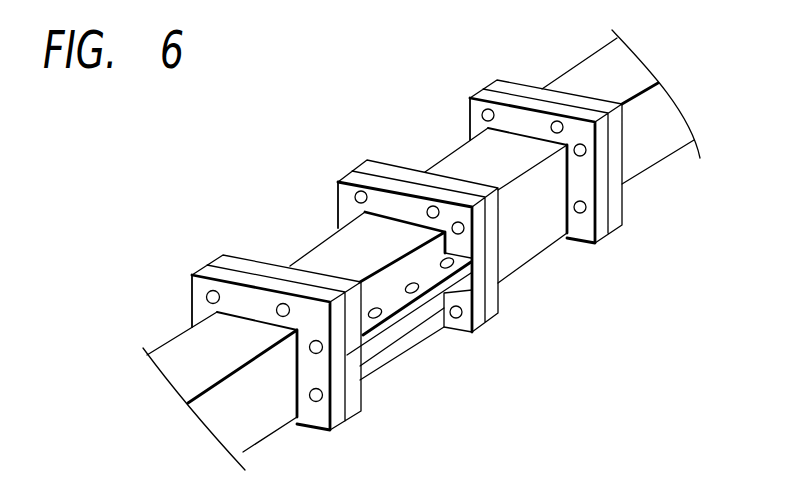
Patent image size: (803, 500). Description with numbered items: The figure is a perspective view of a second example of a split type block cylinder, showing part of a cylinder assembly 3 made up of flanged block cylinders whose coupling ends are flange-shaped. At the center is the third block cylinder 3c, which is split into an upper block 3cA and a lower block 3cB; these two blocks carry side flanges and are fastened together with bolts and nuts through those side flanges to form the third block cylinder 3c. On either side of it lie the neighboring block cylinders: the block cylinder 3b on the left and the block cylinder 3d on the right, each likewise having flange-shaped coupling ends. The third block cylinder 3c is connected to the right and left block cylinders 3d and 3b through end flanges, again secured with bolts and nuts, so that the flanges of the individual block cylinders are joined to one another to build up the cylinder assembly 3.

The cylinder assembly 3 is at (442, 147).
The block cylinder 3b is at (288, 432).
The third block cylinder 3c is at (310, 235).
The upper block 3cA is at (297, 262).
The lower block 3cB is at (402, 335).
The block cylinder 3d is at (545, 248).